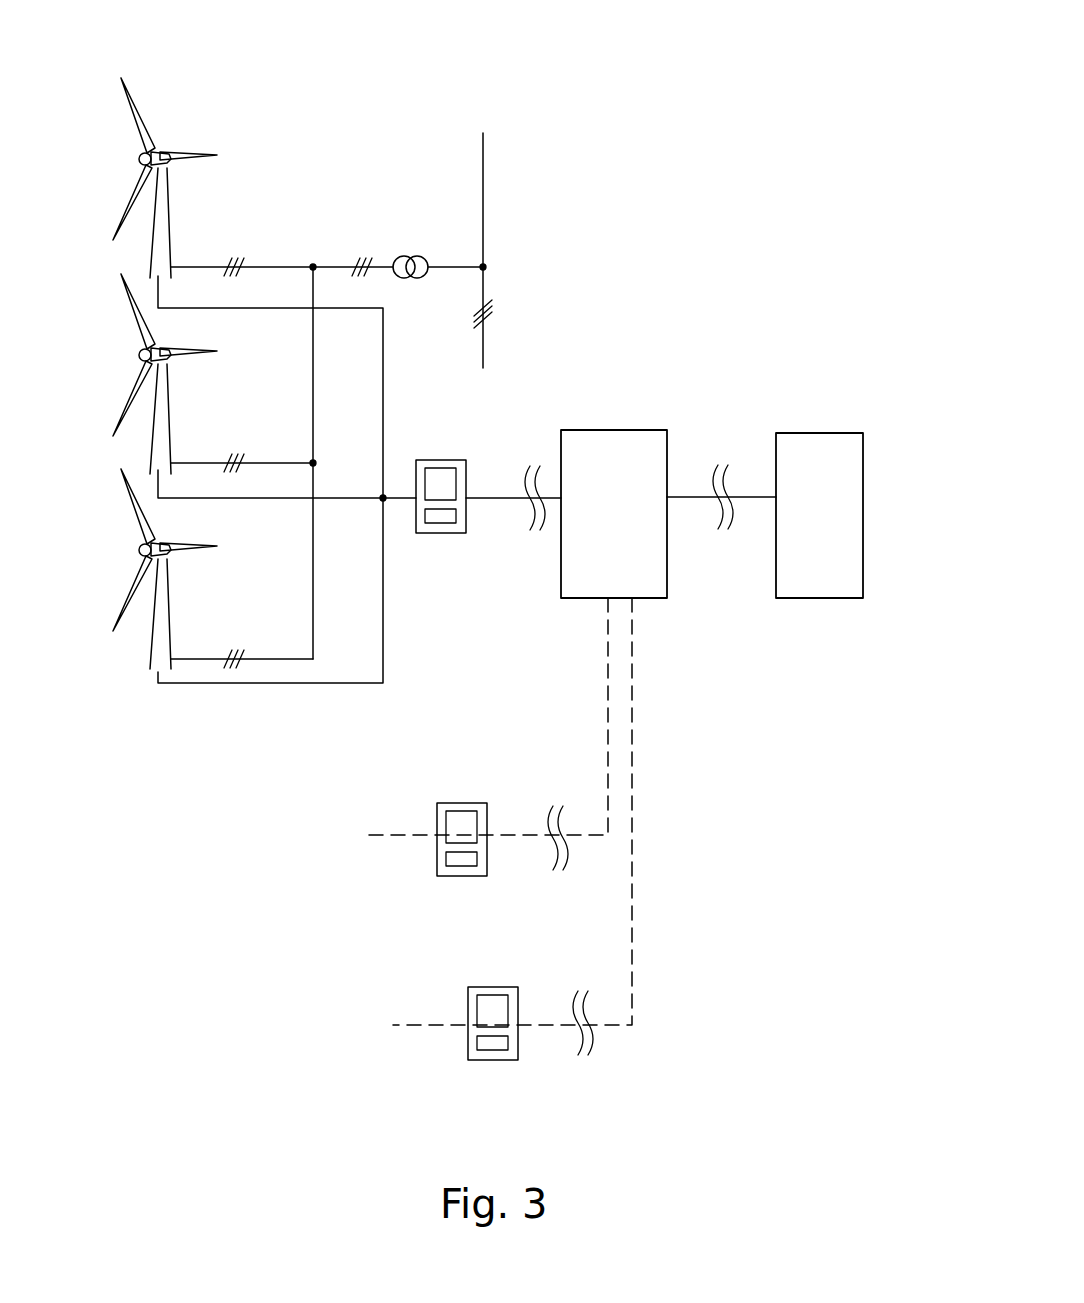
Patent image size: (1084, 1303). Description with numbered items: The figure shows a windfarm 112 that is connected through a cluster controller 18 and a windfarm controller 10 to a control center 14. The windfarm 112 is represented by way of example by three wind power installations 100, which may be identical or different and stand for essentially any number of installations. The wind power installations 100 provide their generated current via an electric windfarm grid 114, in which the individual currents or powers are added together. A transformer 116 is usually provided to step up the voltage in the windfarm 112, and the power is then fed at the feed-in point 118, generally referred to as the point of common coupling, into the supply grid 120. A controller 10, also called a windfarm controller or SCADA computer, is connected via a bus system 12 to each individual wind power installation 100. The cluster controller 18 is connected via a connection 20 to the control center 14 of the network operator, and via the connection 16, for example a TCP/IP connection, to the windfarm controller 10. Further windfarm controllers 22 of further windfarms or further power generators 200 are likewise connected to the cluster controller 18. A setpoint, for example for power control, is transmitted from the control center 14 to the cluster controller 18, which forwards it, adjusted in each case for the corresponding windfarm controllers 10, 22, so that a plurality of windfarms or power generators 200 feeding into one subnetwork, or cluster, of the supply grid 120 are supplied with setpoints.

The power generator 200 is at (229, 145).
The wind power installation 100 is at (163, 215).
The windfarm 112 is at (359, 155).
The electric windfarm grid 114 is at (317, 266).
The transformer 116 is at (412, 250).
The feed-in point 118 is at (488, 257).
The supply grid 120 is at (484, 152).
The controller 10 is at (440, 460).
The bus system 12 is at (383, 637).
The control center 14 is at (864, 488).
The connection 16 is at (508, 499).
The cluster controller 18 is at (668, 480).
The connection 20 is at (712, 499).
The further windfarm controller 22 is at (452, 803).